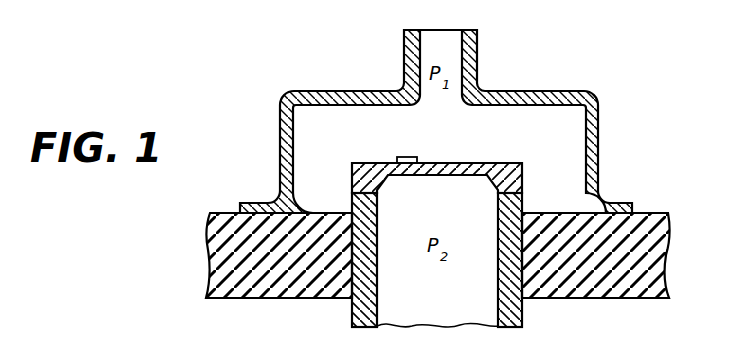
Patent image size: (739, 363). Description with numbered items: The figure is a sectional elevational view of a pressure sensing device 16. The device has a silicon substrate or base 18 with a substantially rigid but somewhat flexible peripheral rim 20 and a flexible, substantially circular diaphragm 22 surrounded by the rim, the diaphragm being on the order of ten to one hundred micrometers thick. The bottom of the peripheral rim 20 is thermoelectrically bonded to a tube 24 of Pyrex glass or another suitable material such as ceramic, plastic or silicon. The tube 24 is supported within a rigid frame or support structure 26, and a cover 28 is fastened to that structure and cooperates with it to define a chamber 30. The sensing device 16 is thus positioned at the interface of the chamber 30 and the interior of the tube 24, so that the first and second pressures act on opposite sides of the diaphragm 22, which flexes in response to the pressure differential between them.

The pressure sensing device 16 is at (540, 75).
The silicon substrate or base 18 is at (494, 163).
The peripheral region or rim 20 is at (522, 180).
The diaphragm 22 is at (432, 163).
The tube 24 is at (522, 320).
The rigid frame or support structure 26 is at (218, 247).
The cover 28 is at (351, 97).
The chamber 30 is at (318, 133).